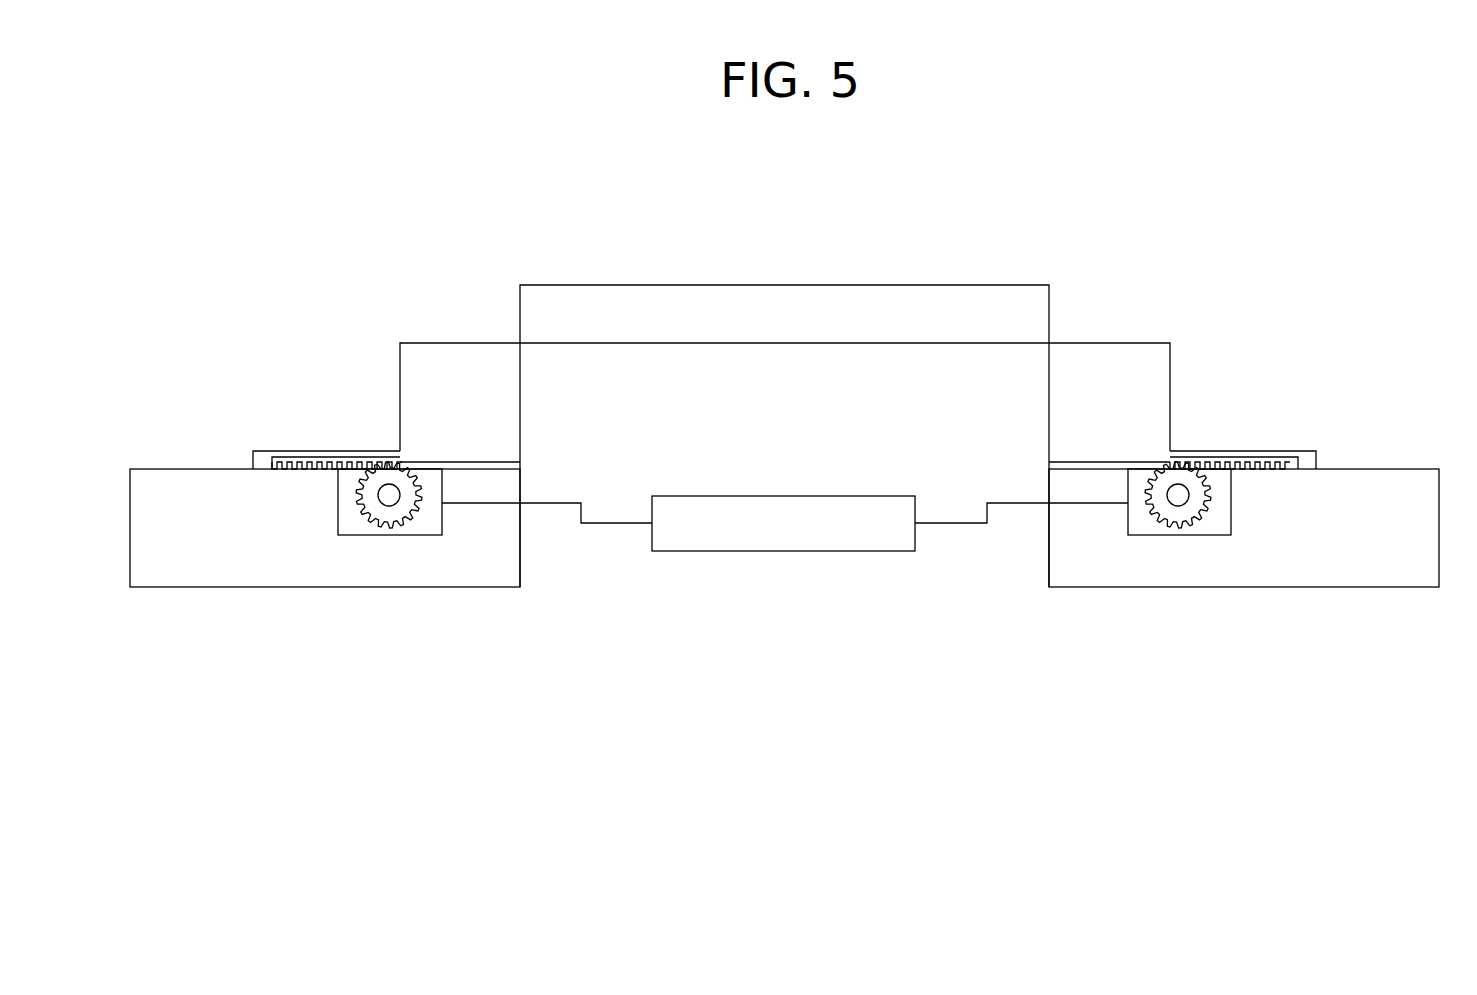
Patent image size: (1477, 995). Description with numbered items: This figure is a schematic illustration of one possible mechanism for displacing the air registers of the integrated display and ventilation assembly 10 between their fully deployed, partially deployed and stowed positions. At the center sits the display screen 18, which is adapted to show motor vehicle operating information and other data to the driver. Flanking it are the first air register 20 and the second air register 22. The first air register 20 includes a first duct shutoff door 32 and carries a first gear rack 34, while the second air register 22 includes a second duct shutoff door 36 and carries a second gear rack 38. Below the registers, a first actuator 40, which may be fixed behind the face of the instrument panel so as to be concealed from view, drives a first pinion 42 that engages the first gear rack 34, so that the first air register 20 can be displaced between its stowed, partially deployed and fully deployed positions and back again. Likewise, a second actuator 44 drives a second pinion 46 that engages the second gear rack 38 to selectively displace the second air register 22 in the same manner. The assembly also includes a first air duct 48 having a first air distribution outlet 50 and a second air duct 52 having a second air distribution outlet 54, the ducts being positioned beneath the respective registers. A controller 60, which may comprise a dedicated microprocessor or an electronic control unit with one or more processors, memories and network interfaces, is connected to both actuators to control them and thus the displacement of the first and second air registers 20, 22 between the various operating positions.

The integrated display and ventilation assembly 10 is at (1152, 187).
The display screen 18 is at (807, 285).
The first air register 20 is at (447, 352).
The second air register 22 is at (1113, 357).
The first duct shutoff door 32 is at (322, 460).
The first gear rack 34 is at (317, 468).
The second duct shutoff door 36 is at (1227, 460).
The second gear rack 38 is at (1260, 470).
The first actuator 40 is at (360, 535).
The first pinion 42 is at (399, 512).
The second actuator 44 is at (1193, 535).
The second pinion 46 is at (1168, 513).
The first air duct 48 is at (238, 553).
The first air distribution outlet 50 is at (482, 462).
The second air duct 52 is at (1347, 553).
The second air distribution outlet 54 is at (1079, 462).
The controller 60 is at (763, 551).